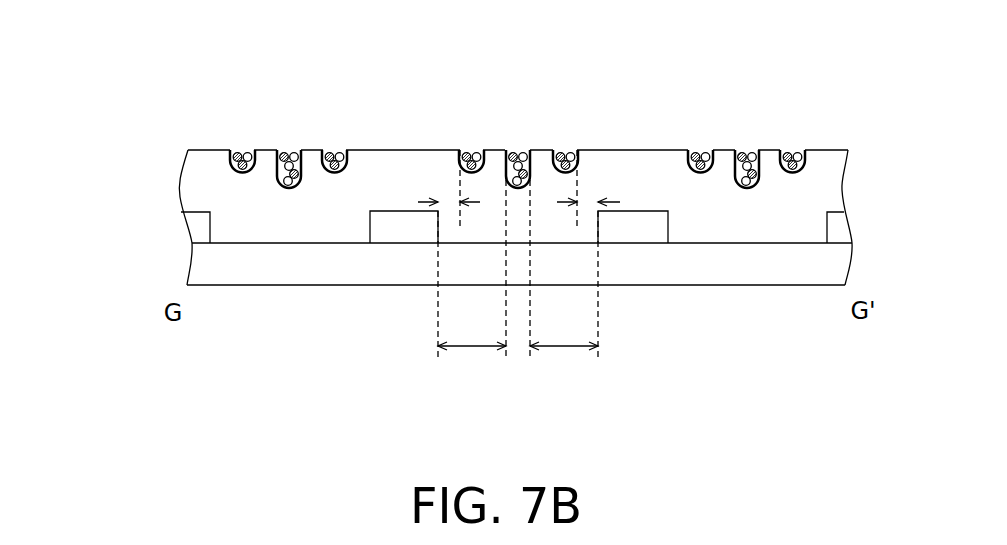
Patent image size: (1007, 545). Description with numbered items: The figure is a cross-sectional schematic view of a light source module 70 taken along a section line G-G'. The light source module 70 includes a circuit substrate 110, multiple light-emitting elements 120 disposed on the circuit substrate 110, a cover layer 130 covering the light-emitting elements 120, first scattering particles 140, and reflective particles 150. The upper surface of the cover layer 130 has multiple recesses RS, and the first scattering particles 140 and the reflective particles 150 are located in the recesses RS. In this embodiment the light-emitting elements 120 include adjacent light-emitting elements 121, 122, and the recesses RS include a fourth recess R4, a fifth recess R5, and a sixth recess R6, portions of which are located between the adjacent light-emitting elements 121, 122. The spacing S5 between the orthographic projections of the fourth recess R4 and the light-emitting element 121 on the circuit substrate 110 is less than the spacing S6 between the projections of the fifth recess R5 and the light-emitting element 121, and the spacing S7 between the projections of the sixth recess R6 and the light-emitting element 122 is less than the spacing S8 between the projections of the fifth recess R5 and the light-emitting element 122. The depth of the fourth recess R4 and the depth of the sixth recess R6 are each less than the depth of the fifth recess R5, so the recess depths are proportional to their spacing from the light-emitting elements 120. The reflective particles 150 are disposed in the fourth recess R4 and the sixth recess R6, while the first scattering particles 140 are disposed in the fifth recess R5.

The light source module 70 is at (905, 386).
The circuit substrate 110 is at (832, 266).
The light-emitting elements 120 is at (84, 23).
The light-emitting element 121 is at (400, 233).
The light-emitting element 122 is at (638, 230).
The cover layer 130 is at (832, 190).
The first scattering particles 140 is at (293, 152).
The reflective particles 150 is at (250, 152).
The recesses RS is at (517, 110).
The fourth recess R4 is at (472, 147).
The fifth recess R5 is at (517, 147).
The sixth recess R6 is at (572, 126).
The spacing S5 is at (447, 202).
The spacing S6 is at (472, 348).
The spacing S7 is at (592, 202).
The spacing S8 is at (563, 348).